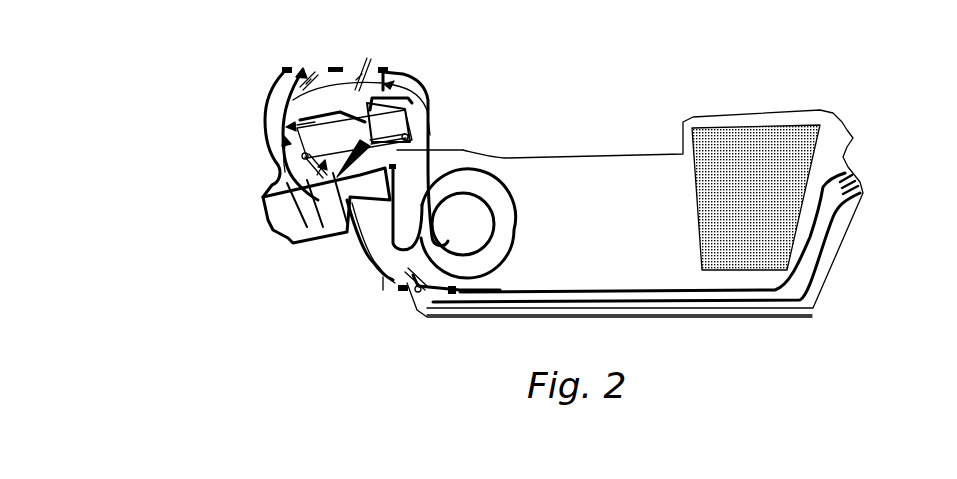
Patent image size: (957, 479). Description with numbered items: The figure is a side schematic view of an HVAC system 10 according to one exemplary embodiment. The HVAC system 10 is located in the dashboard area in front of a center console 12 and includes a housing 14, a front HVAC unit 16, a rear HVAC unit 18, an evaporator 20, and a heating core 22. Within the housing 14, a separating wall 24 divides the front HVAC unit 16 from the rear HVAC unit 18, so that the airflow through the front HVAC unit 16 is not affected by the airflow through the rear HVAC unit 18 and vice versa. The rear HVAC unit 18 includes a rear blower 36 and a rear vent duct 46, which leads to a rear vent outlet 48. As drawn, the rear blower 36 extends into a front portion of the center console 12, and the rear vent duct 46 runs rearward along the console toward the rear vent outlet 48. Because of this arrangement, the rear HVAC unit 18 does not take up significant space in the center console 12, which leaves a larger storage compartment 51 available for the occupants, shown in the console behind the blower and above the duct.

The HVAC system 10 is at (326, 292).
The center console 12 is at (597, 155).
The housing 14 is at (265, 105).
The front HVAC unit 16 is at (268, 64).
The rear HVAC unit 18 is at (458, 121).
The evaporator 20 is at (282, 210).
The heating core 22 is at (422, 108).
The separating wall 24 is at (357, 160).
The rear blower 36 is at (514, 258).
The rear vent duct 46 is at (817, 270).
The rear vent outlet 48 is at (866, 176).
The storage compartment 51 is at (740, 130).